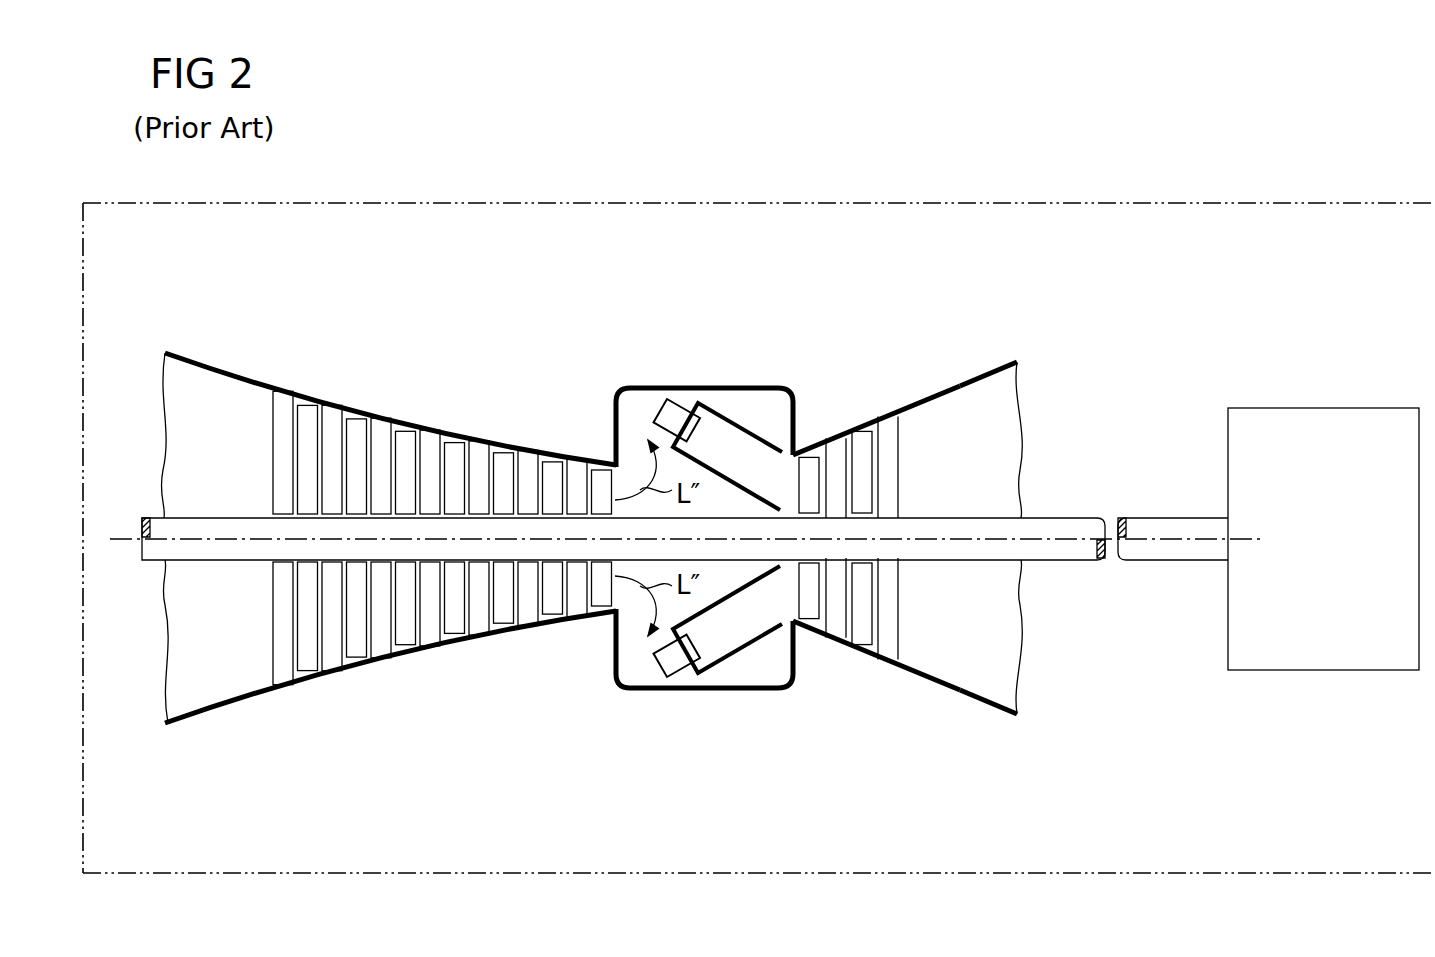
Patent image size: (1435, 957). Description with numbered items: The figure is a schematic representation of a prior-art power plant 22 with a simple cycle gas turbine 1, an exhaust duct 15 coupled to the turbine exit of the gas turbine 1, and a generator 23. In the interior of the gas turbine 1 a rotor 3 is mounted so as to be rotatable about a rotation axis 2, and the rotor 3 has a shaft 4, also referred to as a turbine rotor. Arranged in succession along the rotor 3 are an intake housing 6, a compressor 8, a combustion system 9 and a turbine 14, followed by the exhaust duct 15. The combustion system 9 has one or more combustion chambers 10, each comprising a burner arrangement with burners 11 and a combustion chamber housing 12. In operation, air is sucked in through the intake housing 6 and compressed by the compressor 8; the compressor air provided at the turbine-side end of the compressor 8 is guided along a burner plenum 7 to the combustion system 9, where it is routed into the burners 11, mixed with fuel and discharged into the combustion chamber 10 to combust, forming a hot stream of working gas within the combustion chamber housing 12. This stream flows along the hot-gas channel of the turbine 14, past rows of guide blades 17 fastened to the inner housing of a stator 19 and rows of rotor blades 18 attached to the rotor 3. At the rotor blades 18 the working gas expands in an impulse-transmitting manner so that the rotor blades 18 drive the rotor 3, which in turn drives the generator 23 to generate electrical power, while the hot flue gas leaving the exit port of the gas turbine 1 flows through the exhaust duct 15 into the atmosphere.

The gas turbine 1 is at (1036, 292).
The rotation axis 2 is at (142, 558).
The rotor 3 is at (908, 572).
The shaft 4 is at (1083, 522).
The intake housing 6 is at (218, 372).
The burner plenum 7 is at (625, 412).
The compressor 8 is at (398, 372).
The combustion system 9 is at (788, 308).
The combustion chamber 10 is at (718, 542).
The burner 11 is at (677, 400).
The combustion chamber housing 12 is at (744, 406).
The turbine 14 is at (871, 513).
The exhaust duct 15 is at (976, 378).
The guide blade 17 is at (808, 618).
The rotor blade 18 is at (836, 632).
The stator 19 is at (862, 418).
The power plant 22 is at (984, 203).
The generator 23 is at (1322, 408).